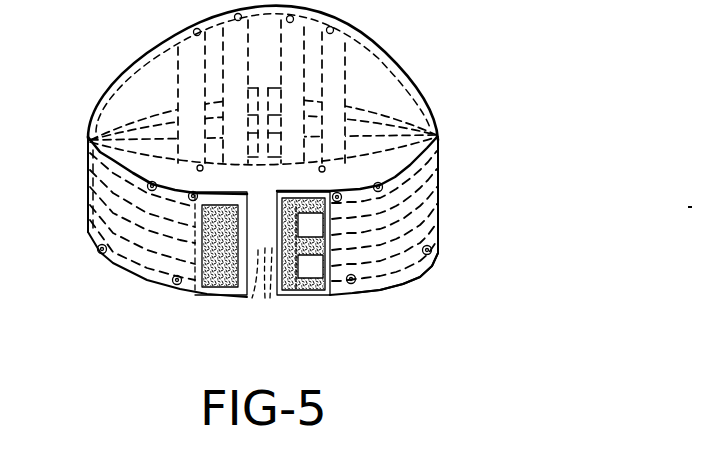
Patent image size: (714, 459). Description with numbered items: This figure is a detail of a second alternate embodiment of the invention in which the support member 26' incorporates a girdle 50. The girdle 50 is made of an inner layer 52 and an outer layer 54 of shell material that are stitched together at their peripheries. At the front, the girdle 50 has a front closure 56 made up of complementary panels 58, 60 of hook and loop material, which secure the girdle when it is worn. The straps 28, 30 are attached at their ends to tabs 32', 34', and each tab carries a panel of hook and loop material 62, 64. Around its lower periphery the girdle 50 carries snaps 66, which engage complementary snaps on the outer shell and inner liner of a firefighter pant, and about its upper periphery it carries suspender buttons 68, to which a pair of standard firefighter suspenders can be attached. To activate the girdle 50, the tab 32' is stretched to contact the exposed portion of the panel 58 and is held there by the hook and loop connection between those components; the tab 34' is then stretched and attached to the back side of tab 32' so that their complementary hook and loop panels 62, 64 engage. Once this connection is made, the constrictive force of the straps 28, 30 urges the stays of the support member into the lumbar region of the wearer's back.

The strap 28 is at (122, 82).
The strap 30 is at (104, 150).
The panel of hook and loop material 62 is at (214, 226).
The outer layer 54 is at (385, 84).
The suspender buttons 68 is at (378, 183).
The support member 26' is at (319, 217).
The girdle 50 is at (424, 227).
The snaps 66 is at (431, 255).
The inner layer 52 is at (388, 283).
The tab 32' is at (179, 259).
The front closure 56 is at (262, 290).
The panel of hook and loop material 58 is at (267, 300).
The panel of hook and loop material 64 is at (270, 302).
The panel of hook and loop material 60 is at (291, 291).
The tab 34' is at (330, 270).